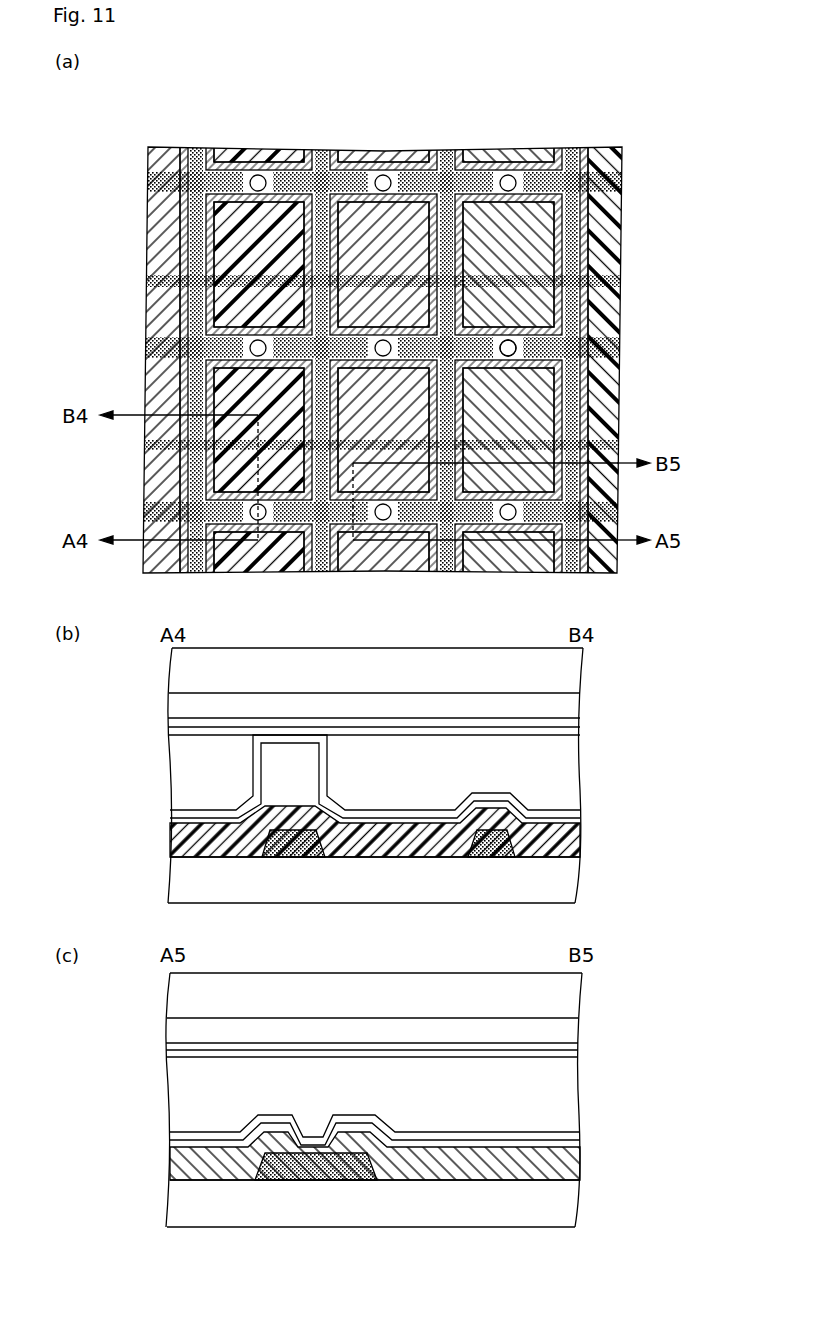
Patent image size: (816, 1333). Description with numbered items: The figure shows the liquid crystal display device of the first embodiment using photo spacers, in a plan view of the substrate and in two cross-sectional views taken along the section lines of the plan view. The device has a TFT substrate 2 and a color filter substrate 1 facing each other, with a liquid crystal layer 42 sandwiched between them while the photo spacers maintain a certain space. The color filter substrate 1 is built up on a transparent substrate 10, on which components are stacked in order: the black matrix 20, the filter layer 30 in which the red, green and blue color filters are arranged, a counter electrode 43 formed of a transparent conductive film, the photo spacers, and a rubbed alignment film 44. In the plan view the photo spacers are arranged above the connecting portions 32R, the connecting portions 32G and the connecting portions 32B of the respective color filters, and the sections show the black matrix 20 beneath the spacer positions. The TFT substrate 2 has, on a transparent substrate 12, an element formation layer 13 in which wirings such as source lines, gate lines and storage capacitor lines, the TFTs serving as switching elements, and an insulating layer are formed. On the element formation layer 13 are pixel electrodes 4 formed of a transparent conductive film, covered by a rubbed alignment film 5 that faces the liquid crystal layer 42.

The filter layer 30 is at (538, 106).
The connecting portion 32R is at (274, 512).
The connecting portion 32G is at (399, 512).
The connecting portion 32B is at (524, 512).
The transparent substrate 12 is at (565, 672).
The element formation layer 13 is at (565, 705).
The pixel electrode 4 is at (565, 722).
The alignment film 5 is at (565, 735).
The TFT substrate 2 is at (645, 660).
The liquid crystal layer 42 is at (565, 783).
The alignment film 44 is at (565, 810).
The counter electrode 43 is at (565, 818).
The color filter substrate 1 is at (663, 805).
The transparent substrate 10 is at (568, 880).
The black matrix 20 is at (292, 857).